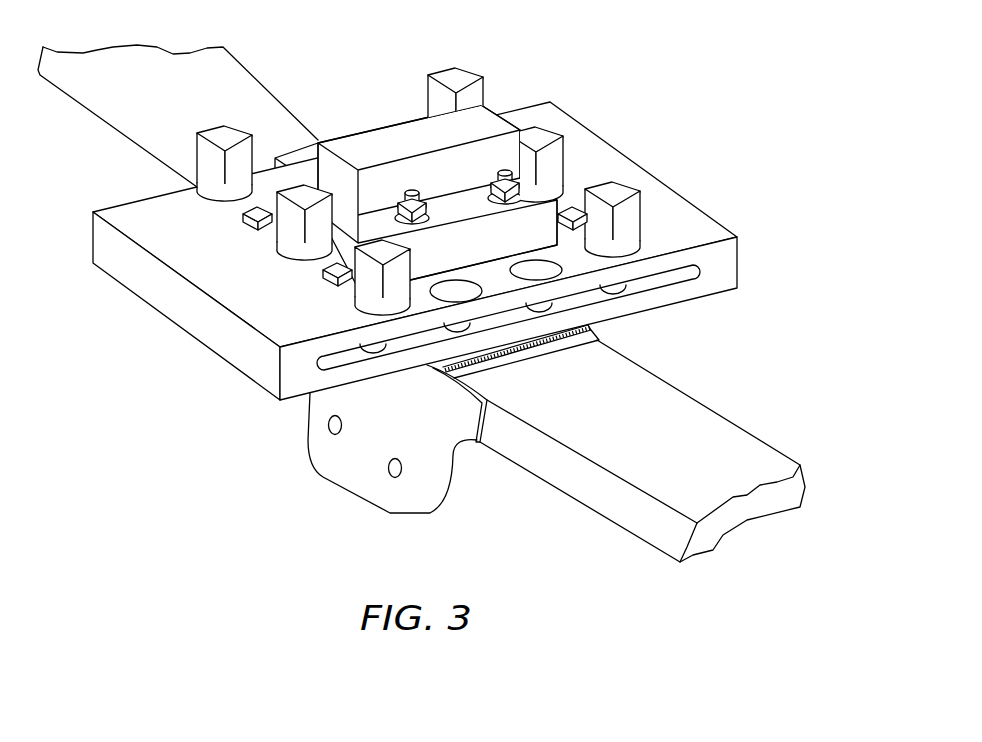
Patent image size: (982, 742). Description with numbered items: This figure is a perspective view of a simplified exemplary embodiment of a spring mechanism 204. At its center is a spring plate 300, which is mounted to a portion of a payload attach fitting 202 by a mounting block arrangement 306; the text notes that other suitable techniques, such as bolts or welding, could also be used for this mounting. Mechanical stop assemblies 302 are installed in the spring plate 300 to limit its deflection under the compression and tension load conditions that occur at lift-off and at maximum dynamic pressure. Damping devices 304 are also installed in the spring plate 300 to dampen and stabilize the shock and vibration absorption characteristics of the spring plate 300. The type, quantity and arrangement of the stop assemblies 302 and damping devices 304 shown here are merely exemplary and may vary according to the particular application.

The payload attach fitting 202 is at (672, 415).
The spring mechanism 204 is at (459, 217).
The spring plate 300 is at (725, 275).
The mechanical stop assemblies 302 is at (261, 222).
The damping devices 304 is at (605, 195).
The mounting block arrangement 306 is at (417, 133).